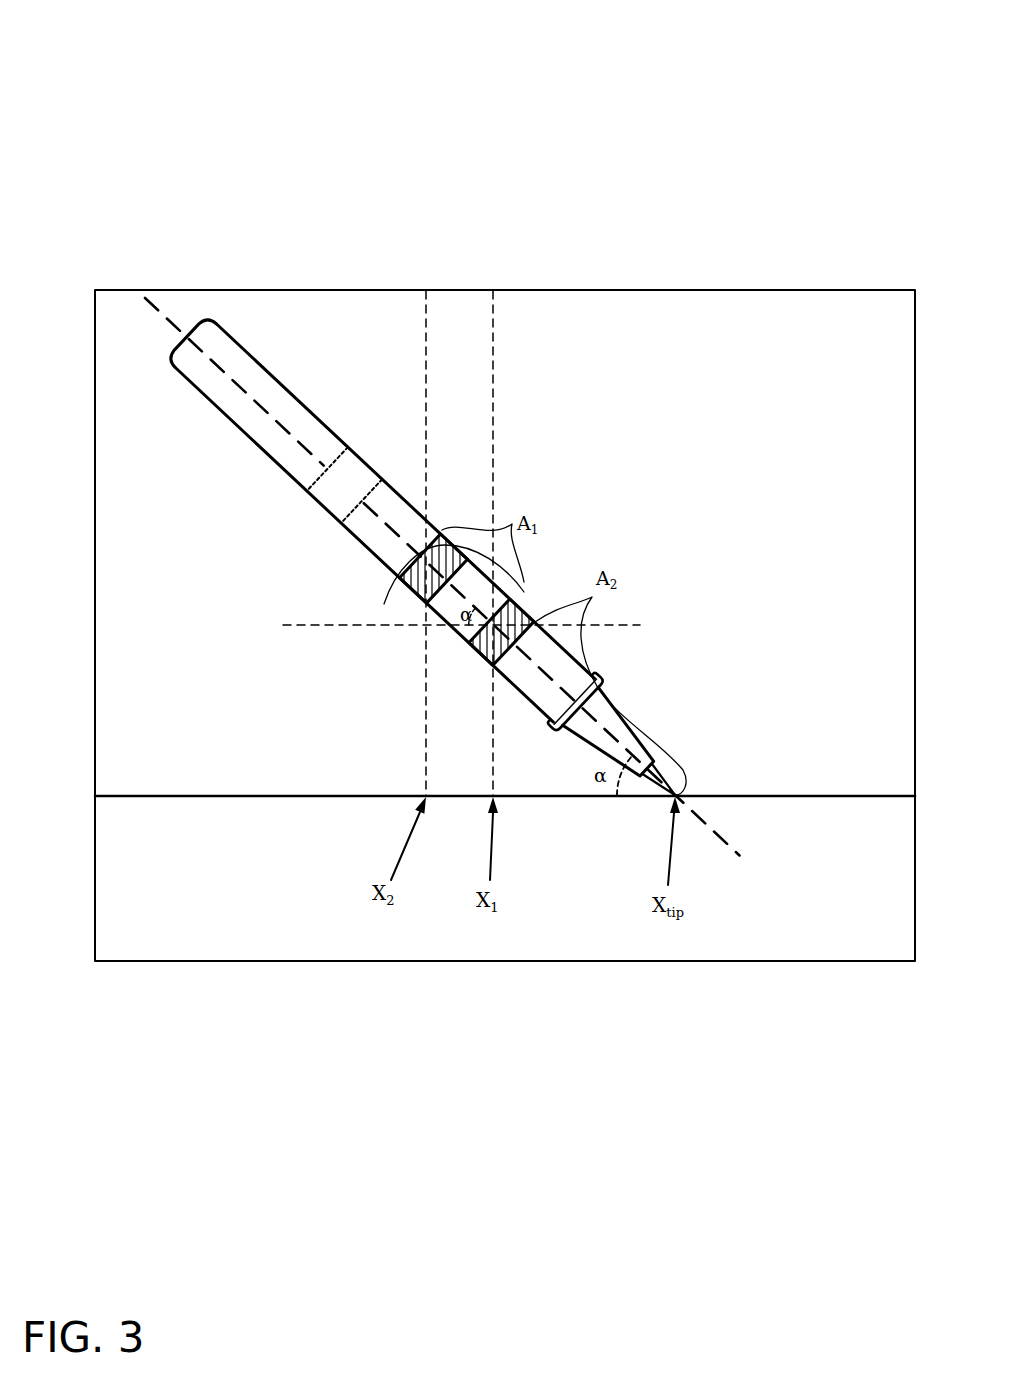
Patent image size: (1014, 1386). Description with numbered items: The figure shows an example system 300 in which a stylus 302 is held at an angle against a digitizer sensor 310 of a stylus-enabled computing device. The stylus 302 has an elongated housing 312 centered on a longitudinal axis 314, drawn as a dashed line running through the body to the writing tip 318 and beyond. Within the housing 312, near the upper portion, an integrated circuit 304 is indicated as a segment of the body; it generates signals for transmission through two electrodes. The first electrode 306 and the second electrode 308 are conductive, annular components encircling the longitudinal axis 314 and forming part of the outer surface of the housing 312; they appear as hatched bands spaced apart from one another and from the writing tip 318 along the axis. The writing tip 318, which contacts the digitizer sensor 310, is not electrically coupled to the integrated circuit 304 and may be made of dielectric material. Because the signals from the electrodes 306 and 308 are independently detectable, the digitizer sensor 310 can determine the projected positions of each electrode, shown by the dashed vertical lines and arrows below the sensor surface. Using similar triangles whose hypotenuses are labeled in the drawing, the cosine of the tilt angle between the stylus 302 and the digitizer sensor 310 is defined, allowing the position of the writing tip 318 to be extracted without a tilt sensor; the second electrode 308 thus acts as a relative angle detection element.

The system 300 is at (126, 110).
The stylus 302 is at (441, 582).
The integrated circuit 304 is at (344, 485).
The first electrode 306 is at (466, 645).
The second electrode 308 is at (418, 582).
The digitizer sensor 310 is at (345, 797).
The housing 312 is at (270, 461).
The longitudinal axis 314 is at (247, 395).
The writing tip 318 is at (679, 795).